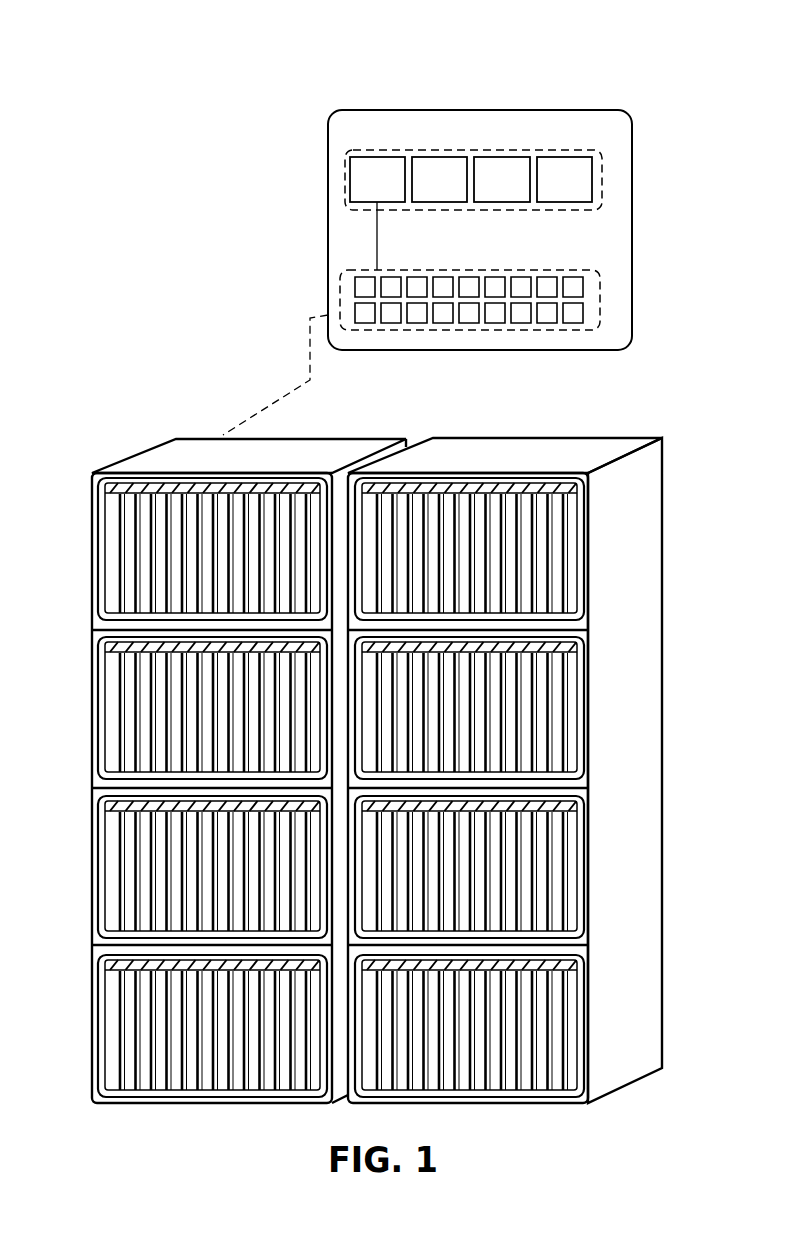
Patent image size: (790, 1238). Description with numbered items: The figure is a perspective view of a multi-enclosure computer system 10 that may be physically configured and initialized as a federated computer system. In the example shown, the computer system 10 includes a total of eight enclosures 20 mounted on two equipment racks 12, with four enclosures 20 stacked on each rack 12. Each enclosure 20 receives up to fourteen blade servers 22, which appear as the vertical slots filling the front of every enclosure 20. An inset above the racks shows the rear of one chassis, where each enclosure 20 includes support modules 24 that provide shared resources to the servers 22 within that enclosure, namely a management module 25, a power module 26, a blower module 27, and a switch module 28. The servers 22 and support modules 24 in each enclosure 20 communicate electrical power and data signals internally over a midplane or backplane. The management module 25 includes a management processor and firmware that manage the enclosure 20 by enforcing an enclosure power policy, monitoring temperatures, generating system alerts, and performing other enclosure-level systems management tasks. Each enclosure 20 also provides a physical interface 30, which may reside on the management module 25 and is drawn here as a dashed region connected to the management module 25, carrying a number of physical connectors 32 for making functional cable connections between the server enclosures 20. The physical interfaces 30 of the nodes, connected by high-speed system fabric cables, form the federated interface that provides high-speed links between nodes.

The multi-enclosure computer system 10 is at (178, 272).
The equipment rack 12 is at (92, 650).
The enclosure 20 is at (96, 585).
The blade server 22 is at (127, 522).
The support modules 24 is at (602, 192).
The management module 25 is at (352, 183).
The power module 26 is at (433, 157).
The blower module 27 is at (507, 157).
The switch module 28 is at (592, 183).
The physical interface 30 is at (600, 313).
The physical connector 32 is at (355, 287).